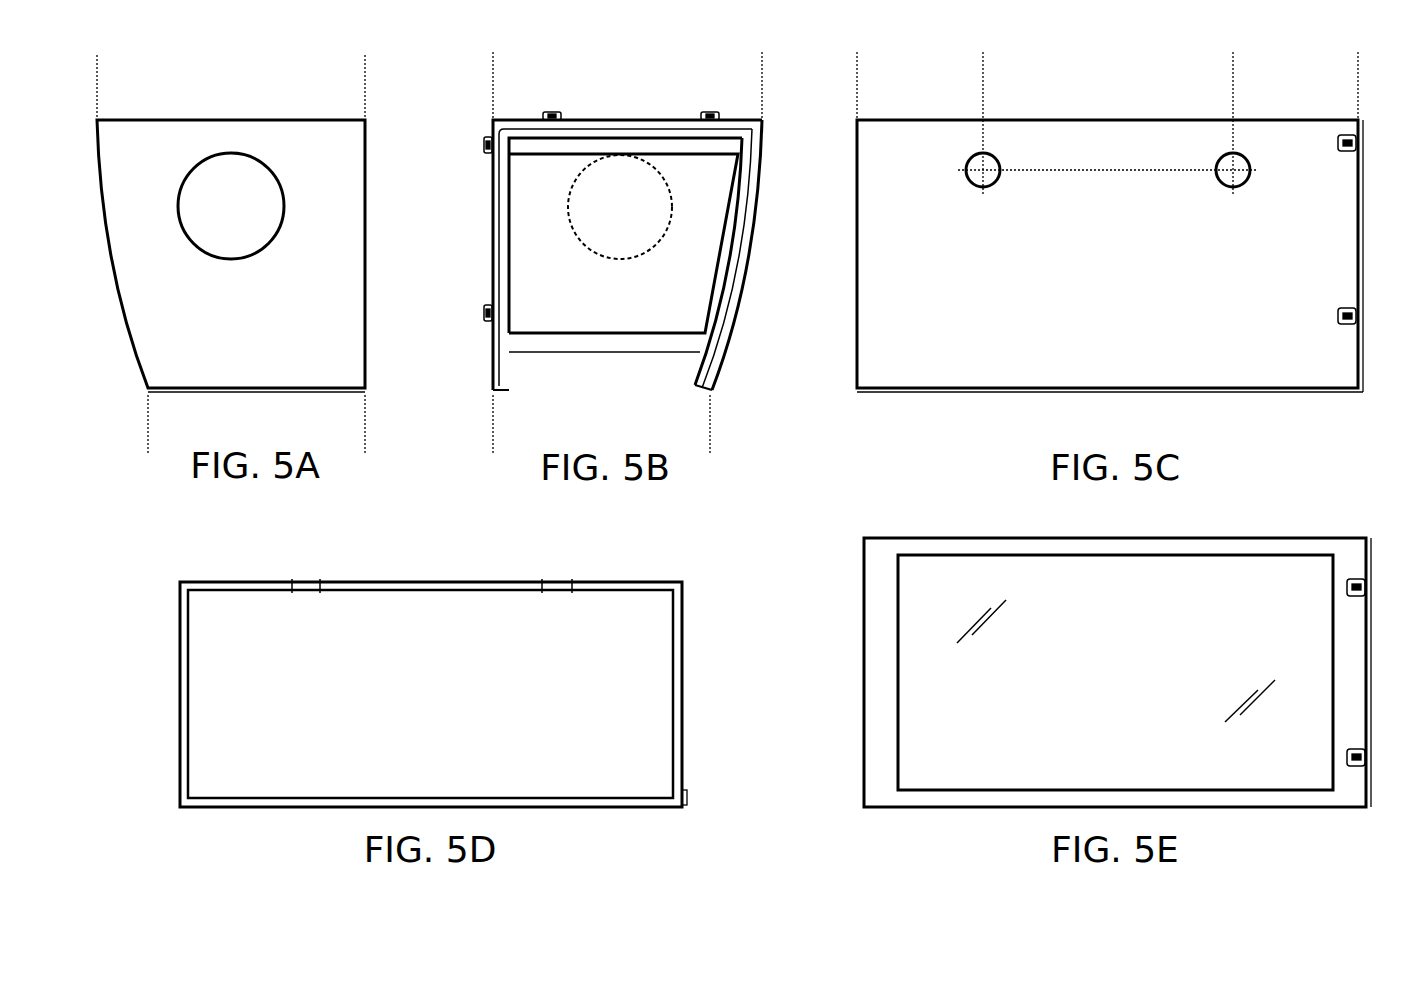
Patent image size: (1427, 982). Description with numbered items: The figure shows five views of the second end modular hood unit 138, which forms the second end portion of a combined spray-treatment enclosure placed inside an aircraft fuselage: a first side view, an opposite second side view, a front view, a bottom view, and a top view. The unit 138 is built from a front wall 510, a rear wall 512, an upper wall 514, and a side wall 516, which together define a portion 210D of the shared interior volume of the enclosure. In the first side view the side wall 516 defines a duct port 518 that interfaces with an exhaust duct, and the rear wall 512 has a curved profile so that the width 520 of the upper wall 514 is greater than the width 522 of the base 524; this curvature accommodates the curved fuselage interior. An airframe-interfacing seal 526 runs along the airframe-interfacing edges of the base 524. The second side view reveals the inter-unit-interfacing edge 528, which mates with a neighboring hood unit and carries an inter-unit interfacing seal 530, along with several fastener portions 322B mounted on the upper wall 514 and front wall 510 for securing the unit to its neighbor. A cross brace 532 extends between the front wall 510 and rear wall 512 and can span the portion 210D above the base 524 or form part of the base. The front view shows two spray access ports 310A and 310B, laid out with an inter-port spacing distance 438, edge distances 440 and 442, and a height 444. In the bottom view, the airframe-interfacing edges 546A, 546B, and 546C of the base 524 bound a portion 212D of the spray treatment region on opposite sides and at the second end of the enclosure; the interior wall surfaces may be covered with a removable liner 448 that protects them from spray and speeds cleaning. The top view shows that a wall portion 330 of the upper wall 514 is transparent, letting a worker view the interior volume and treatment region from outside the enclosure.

In FIG. 5A, the second end modular hood unit 138 is at (126, 355).
In FIG. 5B, the second end modular hood unit 138 is at (484, 363).
In FIG. 5C, the second end modular hood unit 138 is at (848, 347).
In FIG. 5D, the second end modular hood unit 138 is at (170, 770).
In FIG. 5E, the second end modular hood unit 138 is at (1360, 832).
In FIG. 5B, the portion of shared interior volume 210D is at (662, 372).
In FIG. 5D, the portion of shared interior volume 210D is at (633, 655).
In FIG. 5D, the portion of spray treatment region 212D is at (407, 702).
In FIG. 5C, the spray access port 310A is at (1238, 177).
In FIG. 5D, the spray access port 310A is at (557, 603).
In FIG. 5C, the spray access port 310B is at (988, 177).
In FIG. 5D, the spray access port 310B is at (305, 603).
In FIG. 5B, the fastener portion 322B is at (551, 111).
In FIG. 5C, the fastener portion 322B is at (1358, 146).
In FIG. 5E, the fastener portion 322B is at (1366, 591).
In FIG. 5E, the wall portion 330 is at (922, 575).
In FIG. 5C, the inter-port spacing distance 438 is at (986, 85).
In FIG. 5C, the edge distance 440 is at (1355, 85).
In FIG. 5C, the edge distance 442 is at (980, 85).
In FIG. 5C, the height 444 is at (1108, 172).
In FIG. 5D, the liner 448 is at (668, 598).
In FIG. 5A, the front wall 510 is at (368, 273).
In FIG. 5B, the front wall 510 is at (491, 273).
In FIG. 5C, the front wall 510 is at (890, 205).
In FIG. 5D, the front wall 510 is at (415, 580).
In FIG. 5E, the front wall 510 is at (1007, 810).
In FIG. 5A, the rear wall 512 is at (112, 262).
In FIG. 5B, the rear wall 512 is at (746, 258).
In FIG. 5D, the rear wall 512 is at (573, 810).
In FIG. 5E, the rear wall 512 is at (1005, 536).
In FIG. 5A, the upper wall 514 is at (145, 118).
In FIG. 5B, the upper wall 514 is at (655, 118).
In FIG. 5C, the upper wall 514 is at (1190, 118).
In FIG. 5E, the upper wall 514 is at (885, 788).
In FIG. 5A, the side wall 516 is at (315, 250).
In FIG. 5C, the side wall 516 is at (855, 238).
In FIG. 5D, the side wall 516 is at (178, 617).
In FIG. 5E, the side wall 516 is at (862, 672).
In FIG. 5A, the duct port 518 is at (258, 205).
In FIG. 5B, the duct port 518 is at (636, 230).
In FIG. 5D, the duct port 518 is at (206, 690).
In FIG. 5A, the width of upper wall 520 is at (100, 85).
In FIG. 5B, the width of upper wall 520 is at (759, 85).
In FIG. 5A, the width of base 522 is at (150, 422).
In FIG. 5B, the width of base 522 is at (496, 420).
In FIG. 5A, the base 524 is at (178, 394).
In FIG. 5B, the base 524 is at (507, 394).
In FIG. 5C, the base 524 is at (1280, 394).
In FIG. 5D, the base 524 is at (460, 590).
In FIG. 5A, the airframe-interfacing seal 526 is at (338, 389).
In FIG. 5B, the airframe-interfacing seal 526 is at (496, 392).
In FIG. 5C, the airframe-interfacing seal 526 is at (1333, 390).
In FIG. 5D, the airframe-interfacing seal 526 is at (523, 800).
In FIG. 5B, the inter-unit-interfacing edge 528 is at (735, 146).
In FIG. 5C, the inter-unit-interfacing edge 528 is at (1366, 237).
In FIG. 5D, the inter-unit-interfacing edge 528 is at (686, 601).
In FIG. 5E, the inter-unit-interfacing edge 528 is at (1373, 672).
In FIG. 5B, the inter-unit interfacing seal 530 is at (748, 178).
In FIG. 5C, the inter-unit interfacing seal 530 is at (1365, 218).
In FIG. 5D, the inter-unit interfacing seal 530 is at (688, 591).
In FIG. 5E, the inter-unit interfacing seal 530 is at (1368, 717).
In FIG. 5B, the cross brace 532 is at (617, 340).
In FIG. 5D, the cross brace 532 is at (672, 722).
In FIG. 5D, the airframe-interfacing edge 546A is at (373, 585).
In FIG. 5D, the airframe-interfacing edge 546B is at (373, 800).
In FIG. 5D, the airframe-interfacing edge 546C is at (185, 757).